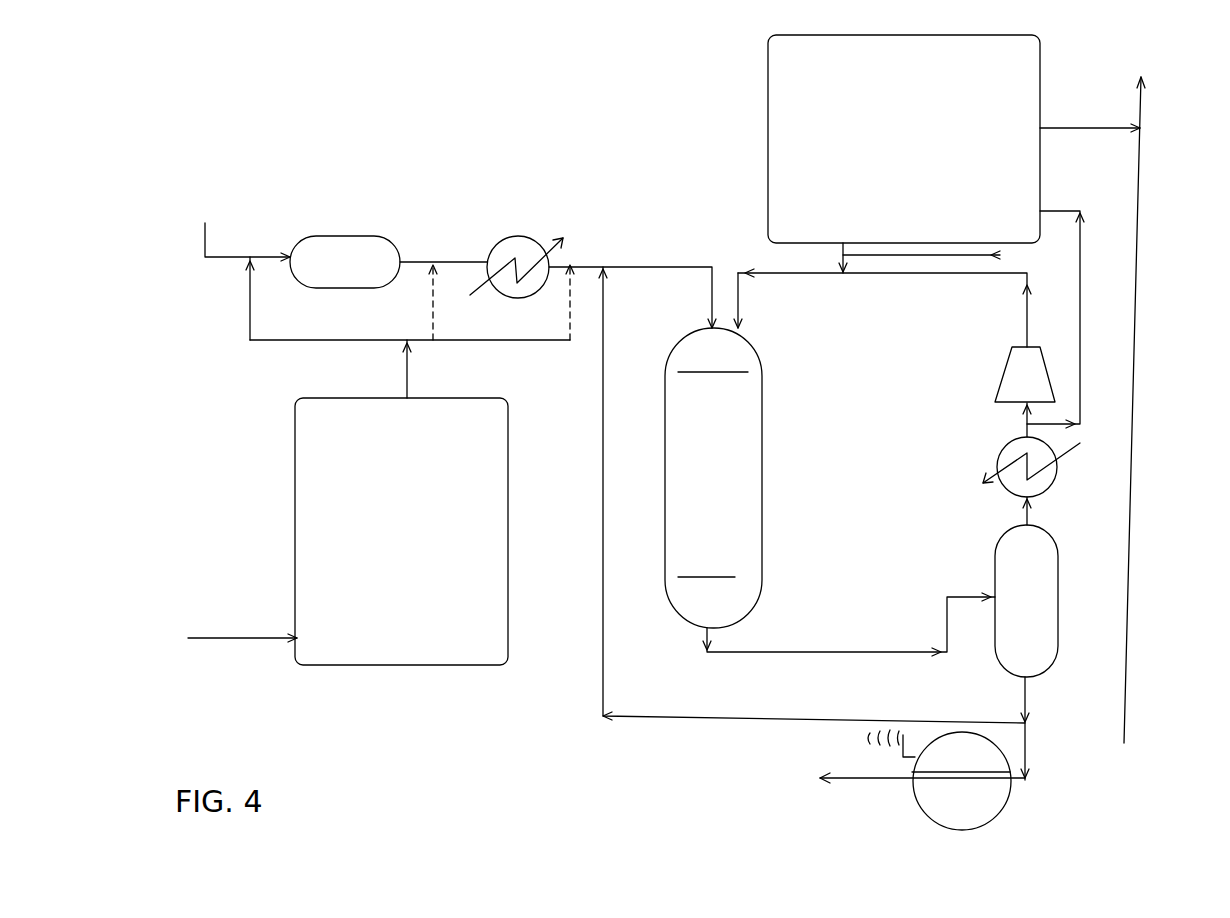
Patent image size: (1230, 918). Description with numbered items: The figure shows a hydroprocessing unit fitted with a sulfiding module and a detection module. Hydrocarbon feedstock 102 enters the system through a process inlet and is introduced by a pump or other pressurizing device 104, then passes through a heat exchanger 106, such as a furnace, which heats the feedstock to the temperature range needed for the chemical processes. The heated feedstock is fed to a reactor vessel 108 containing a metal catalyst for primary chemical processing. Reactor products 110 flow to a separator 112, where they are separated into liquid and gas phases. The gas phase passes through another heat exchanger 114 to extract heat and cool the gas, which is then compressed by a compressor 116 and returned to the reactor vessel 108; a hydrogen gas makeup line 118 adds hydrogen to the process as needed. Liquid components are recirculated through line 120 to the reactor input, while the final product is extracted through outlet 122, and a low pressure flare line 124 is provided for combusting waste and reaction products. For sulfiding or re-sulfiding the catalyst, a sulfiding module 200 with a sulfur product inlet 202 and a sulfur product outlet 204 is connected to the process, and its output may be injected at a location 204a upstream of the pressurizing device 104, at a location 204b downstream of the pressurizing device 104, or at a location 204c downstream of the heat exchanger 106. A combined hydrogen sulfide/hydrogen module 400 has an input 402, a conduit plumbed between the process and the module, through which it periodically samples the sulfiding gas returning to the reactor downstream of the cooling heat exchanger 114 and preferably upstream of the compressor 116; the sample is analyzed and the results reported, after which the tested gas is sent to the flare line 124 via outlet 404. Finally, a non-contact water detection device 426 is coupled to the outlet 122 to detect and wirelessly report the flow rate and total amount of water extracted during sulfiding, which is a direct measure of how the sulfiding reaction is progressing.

The hydrocarbon feedstock 102 is at (247, 224).
The pump or other pressurizing device 104 is at (352, 246).
The heat exchanger 106 is at (517, 236).
The reactor vessel 108 is at (740, 500).
The reactor products 110 is at (813, 655).
The separator 112 is at (1035, 612).
The heat exchanger 114 is at (1000, 455).
The compressor 116 is at (1012, 352).
The hydrogen gas makeup line 118 is at (900, 256).
The liquid recirculation line 120 is at (805, 717).
The final product outlet 122 is at (868, 782).
The low pressure flare line 124 is at (1138, 222).
The sulfiding module 200 is at (485, 462).
The sulfur product inlet 202 is at (208, 633).
The sulfur product outlet 204 is at (410, 378).
The injection location upstream of pressurizing device 204a is at (250, 320).
The injection location downstream of pressurizing device 204b is at (433, 319).
The injection location downstream of heat exchanger 204c is at (573, 318).
The hydrogen sulfide/hydrogen module 400 is at (777, 73).
The module input 402 is at (1080, 330).
The module outlet 404 is at (1065, 118).
The non-contact water detection device 426 is at (985, 808).